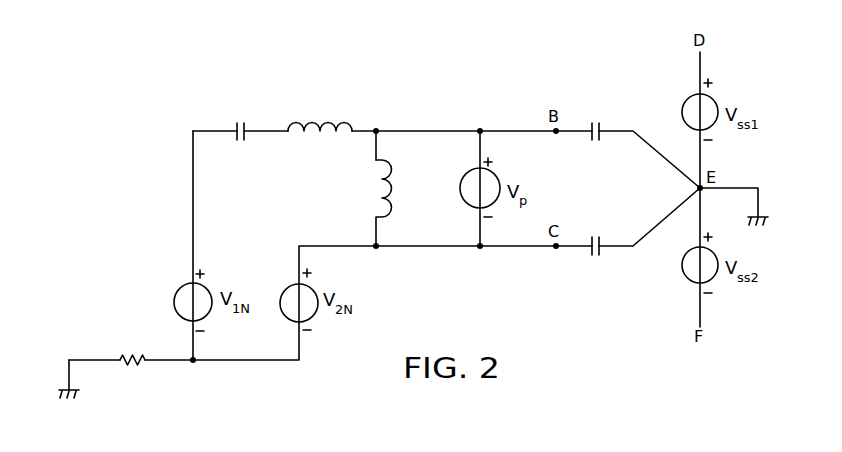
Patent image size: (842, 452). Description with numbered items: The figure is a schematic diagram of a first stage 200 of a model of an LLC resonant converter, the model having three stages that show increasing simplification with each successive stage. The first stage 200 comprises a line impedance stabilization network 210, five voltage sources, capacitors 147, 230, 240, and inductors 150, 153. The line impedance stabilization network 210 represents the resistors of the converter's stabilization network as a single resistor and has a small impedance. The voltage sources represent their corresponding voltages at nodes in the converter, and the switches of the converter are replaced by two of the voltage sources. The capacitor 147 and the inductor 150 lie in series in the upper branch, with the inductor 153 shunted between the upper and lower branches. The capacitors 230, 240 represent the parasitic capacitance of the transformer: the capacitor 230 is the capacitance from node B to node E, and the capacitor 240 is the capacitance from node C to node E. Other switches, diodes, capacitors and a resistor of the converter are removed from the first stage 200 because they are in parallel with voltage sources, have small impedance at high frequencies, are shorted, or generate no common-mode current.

The capacitor 147 is at (240, 120).
The inductor 150 is at (326, 116).
The inductor 153 is at (387, 181).
The first stage 200 is at (508, 58).
The LISN 210 is at (130, 366).
The capacitor 230 is at (598, 120).
The capacitor 240 is at (598, 258).